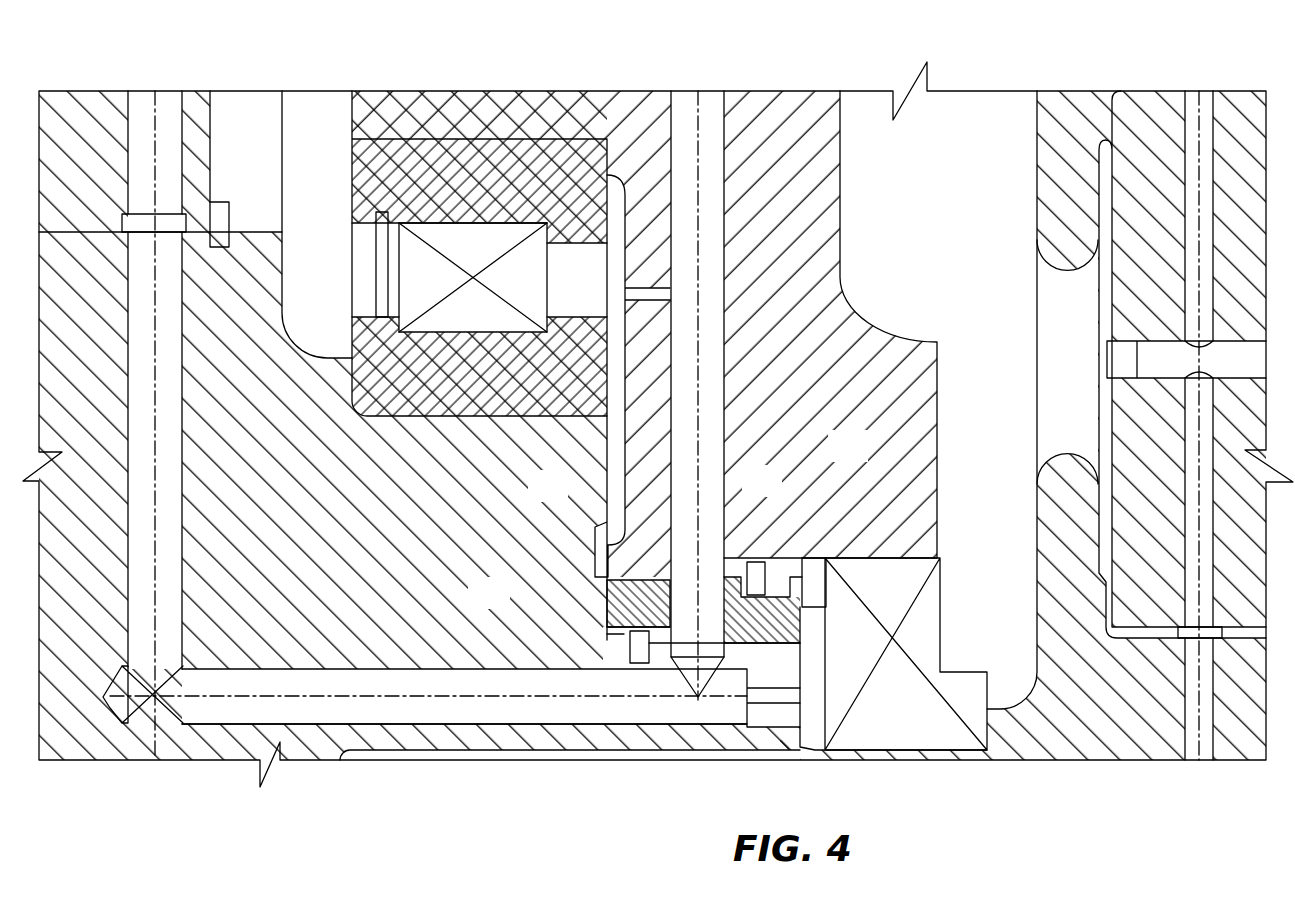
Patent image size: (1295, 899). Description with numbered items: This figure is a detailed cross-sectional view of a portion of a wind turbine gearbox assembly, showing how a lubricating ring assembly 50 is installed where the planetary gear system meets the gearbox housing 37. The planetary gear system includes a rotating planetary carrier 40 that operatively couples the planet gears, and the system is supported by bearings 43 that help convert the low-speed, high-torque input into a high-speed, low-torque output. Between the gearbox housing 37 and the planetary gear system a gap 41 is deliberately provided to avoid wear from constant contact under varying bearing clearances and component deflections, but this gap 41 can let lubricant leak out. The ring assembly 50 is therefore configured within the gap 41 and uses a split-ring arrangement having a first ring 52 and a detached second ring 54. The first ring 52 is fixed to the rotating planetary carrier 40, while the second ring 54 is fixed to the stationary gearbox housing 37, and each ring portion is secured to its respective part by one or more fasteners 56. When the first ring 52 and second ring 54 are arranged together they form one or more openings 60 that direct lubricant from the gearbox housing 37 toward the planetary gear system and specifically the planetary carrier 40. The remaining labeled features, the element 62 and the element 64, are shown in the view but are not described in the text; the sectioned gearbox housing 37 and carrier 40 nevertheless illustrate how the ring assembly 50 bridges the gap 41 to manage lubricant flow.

The gearbox housing 37 is at (578, 100).
The armature shaft 62 is at (712, 132).
The bearings 43 is at (450, 233).
The planetary carrier 40 is at (355, 628).
The passage wall 64 is at (441, 703).
The gap 41 is at (620, 632).
The fasteners 56 is at (640, 655).
The first ring 52 is at (607, 604).
The openings 60 is at (688, 590).
The ring assembly 50 is at (784, 552).
The second ring 54 is at (800, 625).